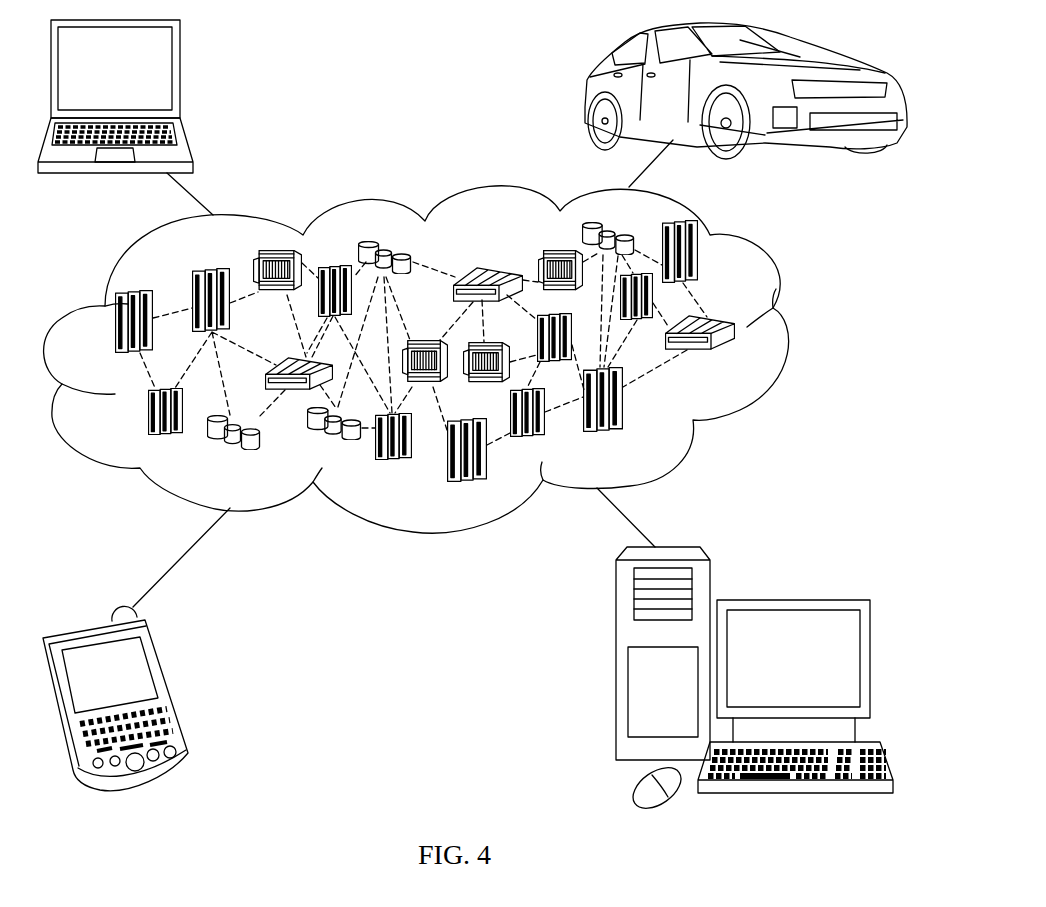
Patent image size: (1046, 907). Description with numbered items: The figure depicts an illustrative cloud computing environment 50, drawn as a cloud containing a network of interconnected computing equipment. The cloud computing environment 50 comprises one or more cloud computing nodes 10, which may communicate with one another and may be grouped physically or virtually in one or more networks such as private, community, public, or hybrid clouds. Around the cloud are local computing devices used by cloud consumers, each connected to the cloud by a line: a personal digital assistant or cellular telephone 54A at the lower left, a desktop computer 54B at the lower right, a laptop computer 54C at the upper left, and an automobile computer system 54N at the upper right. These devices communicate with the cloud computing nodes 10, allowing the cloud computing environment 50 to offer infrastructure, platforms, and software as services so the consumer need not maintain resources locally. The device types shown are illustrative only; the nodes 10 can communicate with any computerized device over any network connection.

The cloud computing node 10 is at (740, 360).
The cloud computing environment 50 is at (792, 330).
The personal digital assistant or cellular telephone 54A is at (170, 688).
The desktop computer 54B is at (792, 600).
The laptop computer 54C is at (180, 77).
The automobile computer system 54N is at (586, 92).